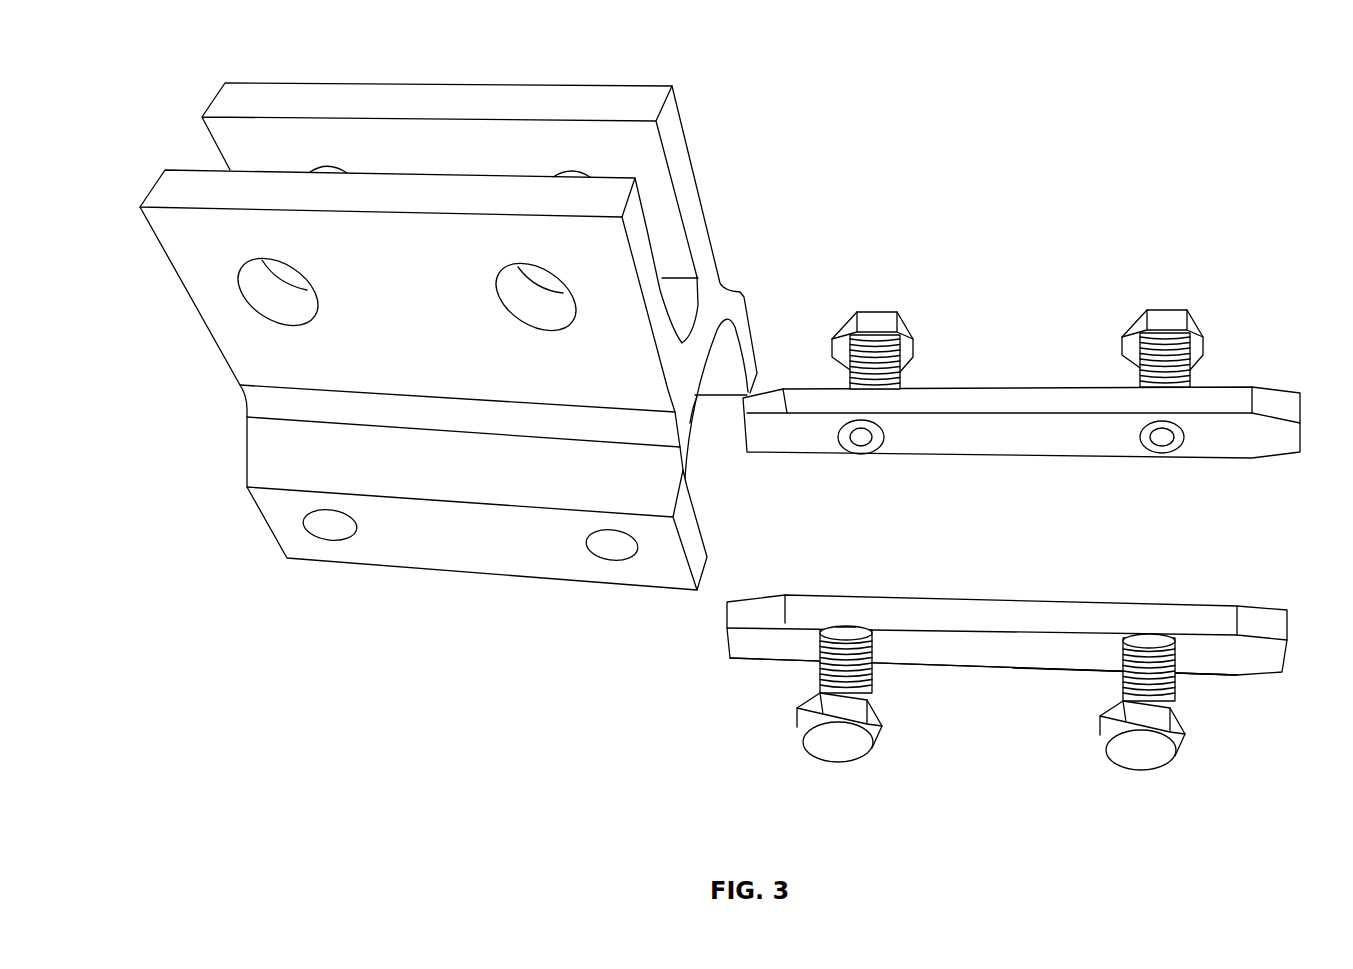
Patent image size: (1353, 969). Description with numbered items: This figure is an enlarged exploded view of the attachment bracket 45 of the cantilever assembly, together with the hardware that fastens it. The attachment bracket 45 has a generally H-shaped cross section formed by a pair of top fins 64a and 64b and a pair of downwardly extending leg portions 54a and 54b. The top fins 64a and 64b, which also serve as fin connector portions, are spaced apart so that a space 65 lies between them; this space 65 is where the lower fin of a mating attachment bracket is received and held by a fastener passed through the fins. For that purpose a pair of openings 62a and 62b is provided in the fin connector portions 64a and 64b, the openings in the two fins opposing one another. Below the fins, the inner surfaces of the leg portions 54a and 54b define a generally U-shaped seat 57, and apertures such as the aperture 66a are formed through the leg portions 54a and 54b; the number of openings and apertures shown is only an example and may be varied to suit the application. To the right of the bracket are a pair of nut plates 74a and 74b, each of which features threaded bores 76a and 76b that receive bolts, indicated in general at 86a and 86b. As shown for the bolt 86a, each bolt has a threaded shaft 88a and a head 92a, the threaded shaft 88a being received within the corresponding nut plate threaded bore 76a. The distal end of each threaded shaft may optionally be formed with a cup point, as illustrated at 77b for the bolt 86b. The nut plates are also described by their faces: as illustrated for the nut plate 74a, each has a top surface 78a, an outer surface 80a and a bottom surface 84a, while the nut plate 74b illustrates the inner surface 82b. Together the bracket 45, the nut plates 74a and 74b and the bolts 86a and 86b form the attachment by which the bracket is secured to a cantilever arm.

The attachment bracket 45 is at (484, 327).
The leg portion 54a is at (472, 545).
The leg portion 54b is at (750, 317).
The U-shaped seat 57 is at (690, 423).
The opening 62a is at (535, 267).
The opening 62b is at (345, 167).
The top fin 64a is at (423, 321).
The top fin 64b is at (449, 155).
The space 65 is at (650, 162).
The aperture 66a is at (330, 545).
The nut plate 74a is at (1007, 677).
The nut plate 74b is at (1021, 377).
The threaded bore 76a is at (872, 641).
The threaded bore 76b is at (1188, 438).
The cup point 77b is at (1162, 453).
The top surface 78a is at (968, 610).
The outer surface 80a is at (1007, 660).
The inner surface 82b is at (980, 448).
The bottom surface 84a is at (1077, 673).
The bolt 86a is at (881, 732).
The bolt 86b is at (1148, 303).
The threaded shaft 88a is at (868, 673).
The head 92a is at (858, 767).